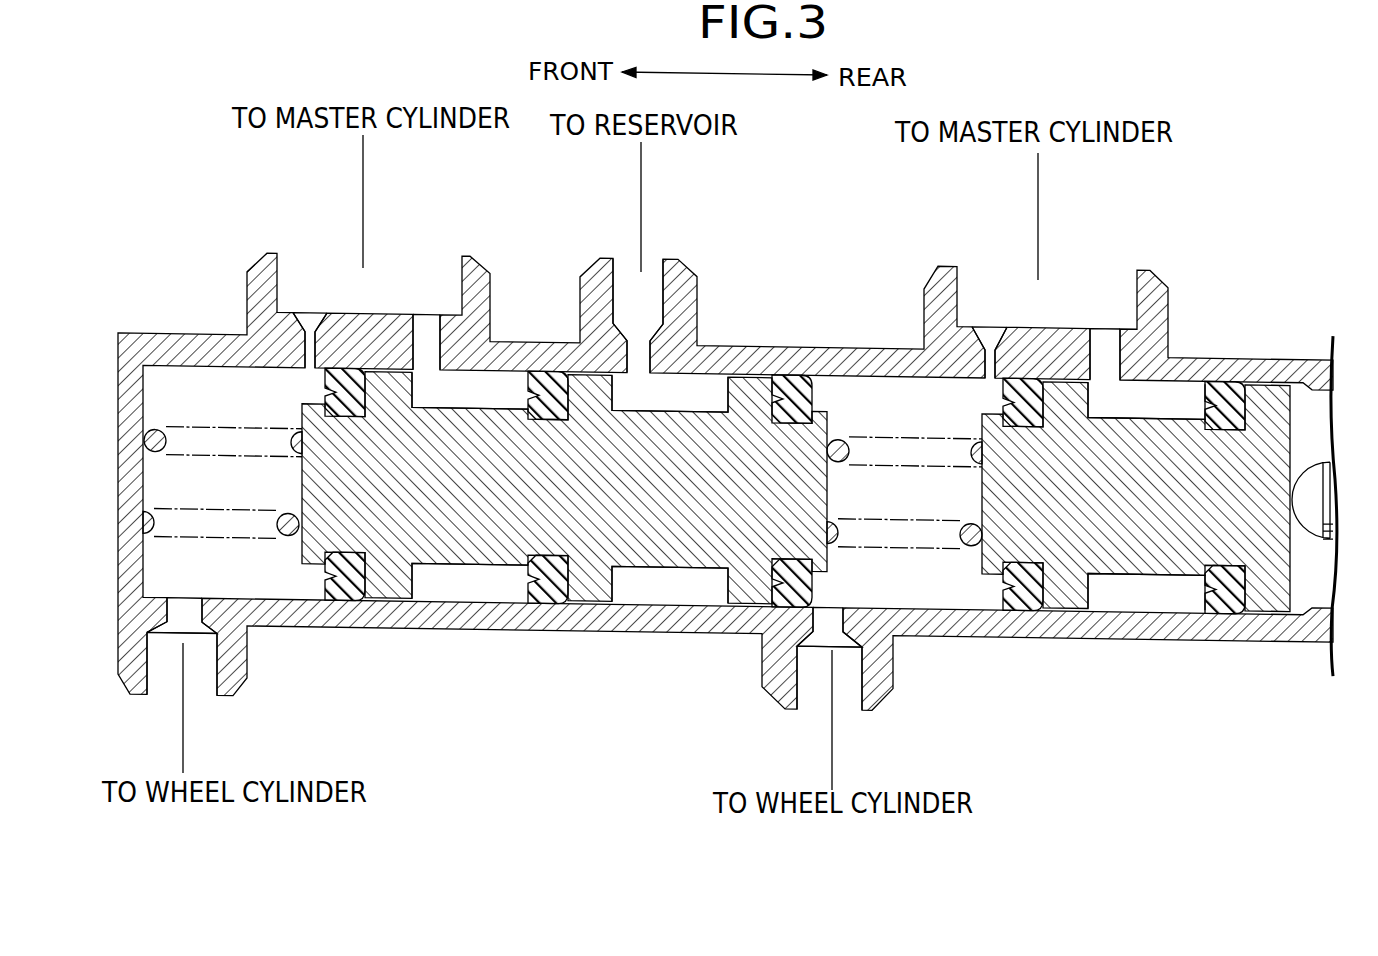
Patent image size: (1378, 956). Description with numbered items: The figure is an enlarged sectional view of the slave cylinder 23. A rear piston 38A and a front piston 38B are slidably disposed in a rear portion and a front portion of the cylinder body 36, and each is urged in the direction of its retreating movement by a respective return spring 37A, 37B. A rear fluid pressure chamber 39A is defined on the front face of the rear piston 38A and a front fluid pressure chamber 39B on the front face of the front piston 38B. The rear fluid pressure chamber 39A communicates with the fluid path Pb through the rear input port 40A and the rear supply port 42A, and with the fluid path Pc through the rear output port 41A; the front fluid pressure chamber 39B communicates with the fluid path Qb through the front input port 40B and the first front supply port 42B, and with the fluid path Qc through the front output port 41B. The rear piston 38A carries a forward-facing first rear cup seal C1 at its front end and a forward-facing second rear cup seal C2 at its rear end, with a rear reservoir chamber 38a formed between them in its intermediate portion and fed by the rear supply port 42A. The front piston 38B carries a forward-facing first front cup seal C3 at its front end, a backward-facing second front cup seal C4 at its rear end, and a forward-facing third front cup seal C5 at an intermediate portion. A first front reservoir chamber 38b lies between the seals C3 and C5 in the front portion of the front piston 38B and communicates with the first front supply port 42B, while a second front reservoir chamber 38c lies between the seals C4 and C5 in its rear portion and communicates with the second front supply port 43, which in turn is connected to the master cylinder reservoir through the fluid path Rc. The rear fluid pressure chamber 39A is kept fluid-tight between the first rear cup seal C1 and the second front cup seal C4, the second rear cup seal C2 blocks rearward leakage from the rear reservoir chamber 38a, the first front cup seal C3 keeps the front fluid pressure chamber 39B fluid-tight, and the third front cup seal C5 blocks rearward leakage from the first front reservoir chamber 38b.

The slave cylinder 23 is at (765, 292).
The cylinder body 36 is at (789, 348).
The return spring 37A is at (848, 444).
The return spring 37B is at (158, 432).
The rear piston 38A is at (1162, 508).
The front piston 38B is at (550, 502).
The rear reservoir chamber 38a is at (1172, 410).
The first front reservoir chamber 38b is at (499, 400).
The second front reservoir chamber 38c is at (689, 400).
The rear fluid pressure chamber 39A is at (929, 502).
The front fluid pressure chamber 39B is at (242, 494).
The rear input port 40A is at (990, 330).
The front input port 40B is at (313, 316).
The rear output port 41A is at (832, 612).
The front output port 41B is at (188, 603).
The rear supply port 42A is at (1105, 340).
The first front supply port 42B is at (429, 325).
The second front supply port 43 is at (627, 318).
The first rear cup seal C1 is at (1028, 612).
The second rear cup seal C2 is at (1222, 612).
The first front cup seal C3 is at (352, 600).
The second front cup seal C4 is at (778, 605).
The third front cup seal C5 is at (533, 603).
The fluid path Qb is at (363, 218).
The fluid path Rc is at (641, 222).
The fluid path Pb is at (1038, 218).
The fluid path Qc is at (183, 715).
The fluid path Pc is at (832, 718).